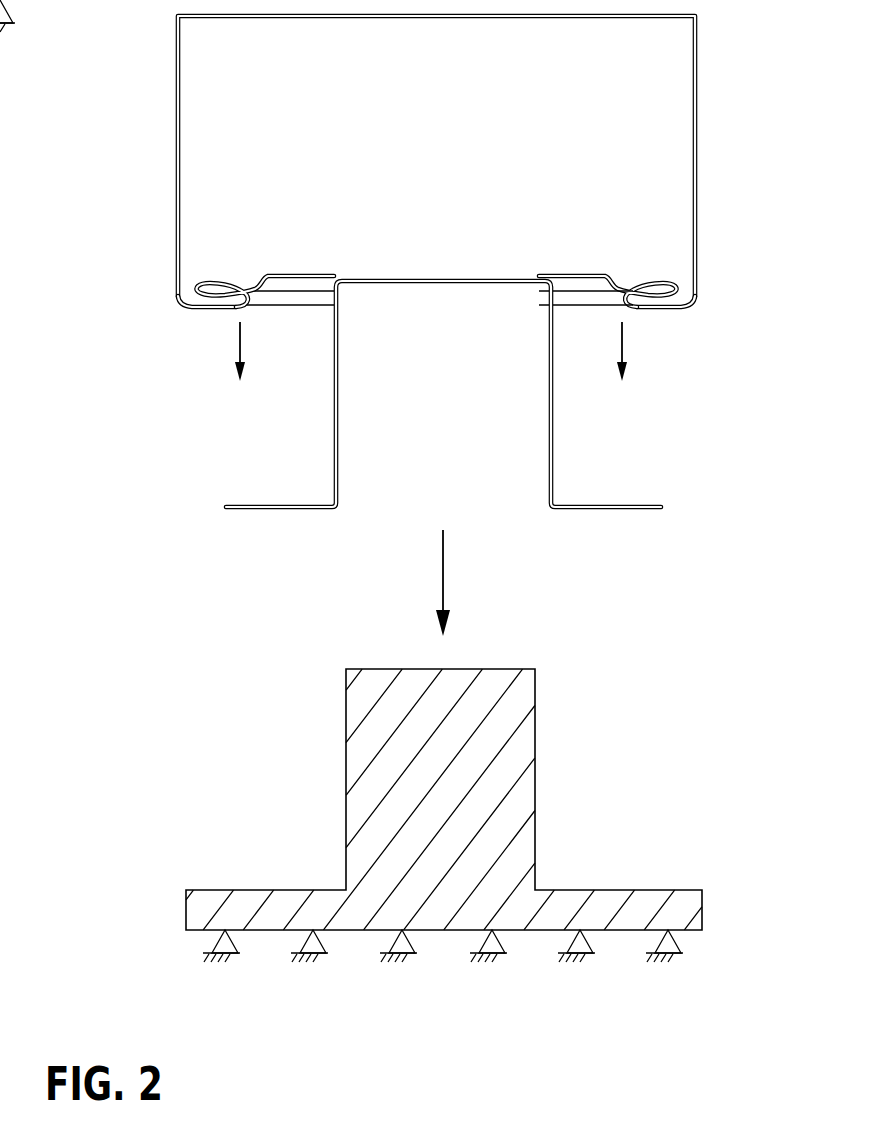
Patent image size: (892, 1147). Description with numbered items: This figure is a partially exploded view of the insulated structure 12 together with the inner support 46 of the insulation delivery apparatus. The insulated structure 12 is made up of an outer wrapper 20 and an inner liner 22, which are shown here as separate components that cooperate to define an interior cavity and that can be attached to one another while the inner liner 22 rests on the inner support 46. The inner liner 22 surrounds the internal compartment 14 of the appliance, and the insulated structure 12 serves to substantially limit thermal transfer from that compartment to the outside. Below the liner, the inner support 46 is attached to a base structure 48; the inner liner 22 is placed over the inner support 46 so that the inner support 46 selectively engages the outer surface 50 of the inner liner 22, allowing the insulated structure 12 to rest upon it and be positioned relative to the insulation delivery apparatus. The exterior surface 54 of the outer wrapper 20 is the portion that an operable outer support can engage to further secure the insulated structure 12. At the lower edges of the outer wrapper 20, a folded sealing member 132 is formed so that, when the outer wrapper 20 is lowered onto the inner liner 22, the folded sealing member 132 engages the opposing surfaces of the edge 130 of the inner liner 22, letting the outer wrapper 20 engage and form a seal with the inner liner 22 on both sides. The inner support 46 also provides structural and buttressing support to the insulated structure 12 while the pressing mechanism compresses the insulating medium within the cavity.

The insulated structure 12 is at (718, 365).
The internal compartment 14 is at (364, 494).
The outer wrapper 20 is at (710, 222).
The inner liner 22 is at (561, 443).
The inner support 46 is at (560, 797).
The base structure 48 is at (382, 963).
The outer surface 50 is at (549, 358).
The exterior surface 54 is at (697, 158).
The edge 130 is at (245, 506).
The folded sealing member 132 is at (204, 270).